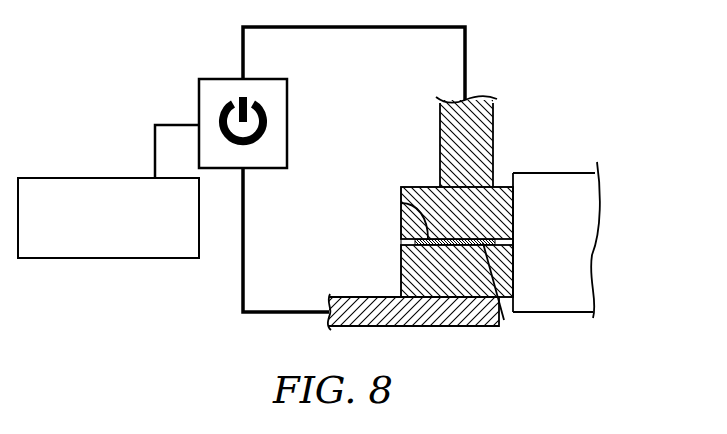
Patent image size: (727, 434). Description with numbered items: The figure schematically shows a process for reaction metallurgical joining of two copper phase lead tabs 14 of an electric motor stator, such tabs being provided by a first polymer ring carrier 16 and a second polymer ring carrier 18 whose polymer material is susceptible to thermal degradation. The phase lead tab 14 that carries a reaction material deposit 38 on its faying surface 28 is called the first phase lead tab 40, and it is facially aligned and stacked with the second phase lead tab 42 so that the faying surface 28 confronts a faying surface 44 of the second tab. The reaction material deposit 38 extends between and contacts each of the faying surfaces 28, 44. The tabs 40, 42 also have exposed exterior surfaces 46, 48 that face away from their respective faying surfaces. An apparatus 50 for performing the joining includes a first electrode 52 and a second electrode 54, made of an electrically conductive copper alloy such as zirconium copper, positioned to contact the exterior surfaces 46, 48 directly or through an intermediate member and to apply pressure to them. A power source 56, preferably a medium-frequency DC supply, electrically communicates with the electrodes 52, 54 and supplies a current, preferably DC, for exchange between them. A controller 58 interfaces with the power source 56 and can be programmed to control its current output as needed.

The phase lead tab 14 is at (513, 212).
The first polymer ring carrier 16 is at (583, 275).
The second polymer ring carrier 18 is at (583, 207).
The faying surface 28 is at (401, 204).
The reaction material deposit 38 is at (504, 320).
The first phase lead tab 40 is at (443, 276).
The second phase lead tab 42 is at (443, 223).
The faying surface 44 is at (416, 245).
The exposed exterior surface 46 is at (405, 311).
The exposed exterior surface 48 is at (410, 187).
The apparatus 50 is at (216, 63).
The first electrode 52 is at (358, 315).
The second electrode 54 is at (492, 140).
The power source 56 is at (273, 100).
The controller 58 is at (99, 248).